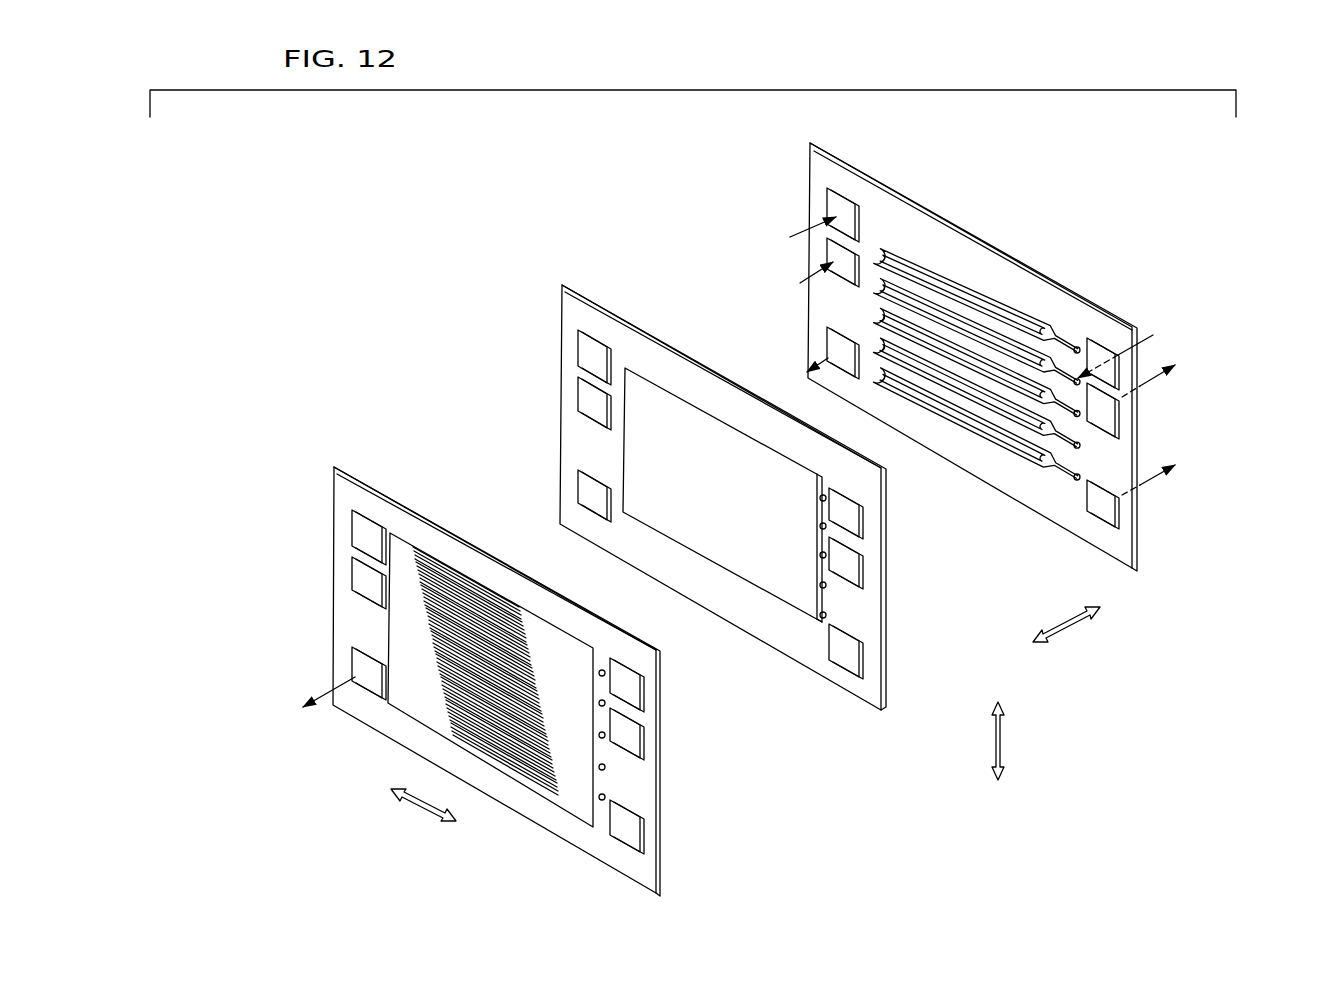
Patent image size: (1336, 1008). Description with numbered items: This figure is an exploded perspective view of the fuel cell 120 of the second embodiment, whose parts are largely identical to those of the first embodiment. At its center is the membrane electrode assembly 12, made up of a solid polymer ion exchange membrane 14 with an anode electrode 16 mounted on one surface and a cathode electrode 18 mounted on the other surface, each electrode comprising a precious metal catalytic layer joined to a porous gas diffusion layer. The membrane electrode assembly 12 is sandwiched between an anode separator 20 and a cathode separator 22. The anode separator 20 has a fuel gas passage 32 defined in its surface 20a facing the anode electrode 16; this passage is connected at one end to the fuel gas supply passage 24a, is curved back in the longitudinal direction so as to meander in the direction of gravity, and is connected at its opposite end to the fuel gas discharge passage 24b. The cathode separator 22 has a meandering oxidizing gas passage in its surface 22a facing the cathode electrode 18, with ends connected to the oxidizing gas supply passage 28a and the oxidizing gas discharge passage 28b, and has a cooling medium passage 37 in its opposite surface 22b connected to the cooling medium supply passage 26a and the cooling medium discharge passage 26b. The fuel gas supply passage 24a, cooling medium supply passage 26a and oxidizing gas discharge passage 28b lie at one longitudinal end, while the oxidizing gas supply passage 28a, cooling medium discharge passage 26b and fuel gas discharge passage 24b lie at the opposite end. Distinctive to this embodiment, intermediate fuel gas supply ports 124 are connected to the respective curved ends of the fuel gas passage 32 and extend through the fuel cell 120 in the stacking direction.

The fuel cell 120 is at (548, 200).
The membrane electrode assembly 12 is at (532, 305).
The solid polymer ion exchange membrane 14 is at (690, 352).
The anode electrode 16 is at (770, 545).
The cathode electrode 18 is at (713, 549).
The anode separator 20 is at (975, 220).
The surface of anode separator 20a is at (912, 225).
The cathode separator 22 is at (287, 448).
The surface of cathode separator 22a is at (511, 591).
The opposite surface of cathode separator 22b is at (427, 542).
The fuel gas supply passage 24a is at (370, 530).
The fuel gas discharge passage 24b is at (638, 835).
The cooling medium supply passage 26a is at (353, 572).
The cooling medium discharge passage 26b is at (640, 740).
The oxidizing gas supply passage 28a is at (640, 693).
The oxidizing gas discharge passage 28b is at (353, 662).
The fuel gas passage 32 is at (989, 292).
The cooling medium passage 37 is at (542, 782).
The intermediate fuel gas supply ports 124 is at (1075, 478).